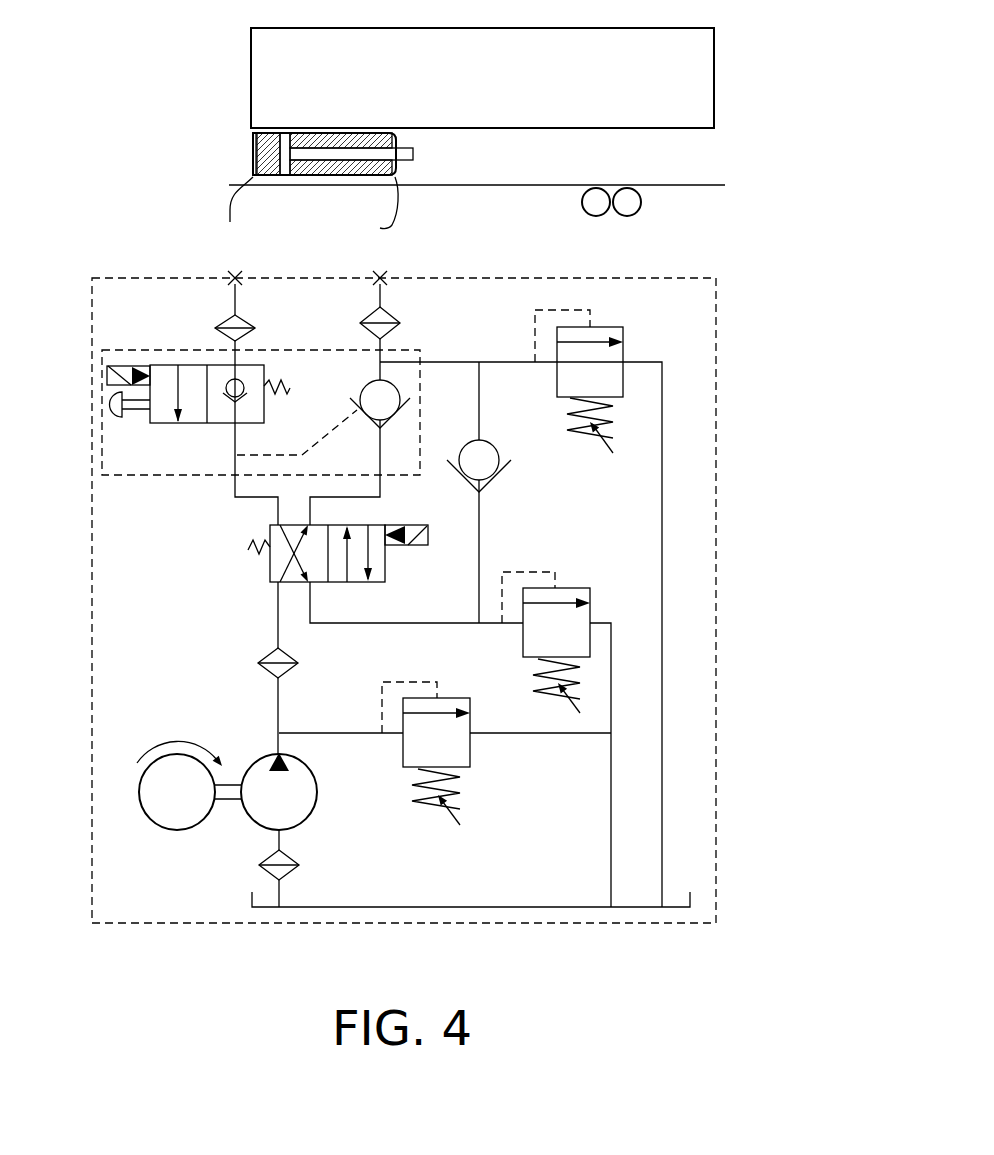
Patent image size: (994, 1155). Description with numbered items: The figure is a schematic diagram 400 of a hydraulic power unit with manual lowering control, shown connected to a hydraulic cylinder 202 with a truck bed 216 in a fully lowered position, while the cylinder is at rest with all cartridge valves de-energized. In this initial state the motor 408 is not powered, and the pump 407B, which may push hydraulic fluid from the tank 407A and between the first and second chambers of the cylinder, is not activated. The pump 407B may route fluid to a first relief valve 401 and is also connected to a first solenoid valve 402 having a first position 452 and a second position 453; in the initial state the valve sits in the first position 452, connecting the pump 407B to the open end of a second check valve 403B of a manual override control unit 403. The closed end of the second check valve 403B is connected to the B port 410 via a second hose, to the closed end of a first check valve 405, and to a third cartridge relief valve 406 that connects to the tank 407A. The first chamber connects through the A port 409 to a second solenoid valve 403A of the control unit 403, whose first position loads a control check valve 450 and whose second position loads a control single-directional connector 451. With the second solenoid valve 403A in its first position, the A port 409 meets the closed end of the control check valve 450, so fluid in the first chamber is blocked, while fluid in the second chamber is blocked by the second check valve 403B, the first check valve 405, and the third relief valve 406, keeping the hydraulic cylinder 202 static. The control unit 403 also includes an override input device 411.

The truck bed 216 is at (688, 77).
The hydraulic cylinder 202 is at (233, 152).
The A port 409 is at (211, 251).
The B port 410 is at (407, 247).
The schematic diagram 400 is at (776, 950).
The manual override control unit 403 is at (157, 497).
The second solenoid valve 403A is at (163, 379).
The second check valve 403B is at (460, 431).
The control single-directional connector 451 is at (170, 378).
The control check valve 450 is at (256, 372).
The override input device 411 is at (108, 402).
The first check valve 405 is at (548, 494).
The third cartridge relief valve 406 is at (678, 327).
The first solenoid valve 402 is at (335, 593).
The first position 452 is at (292, 584).
The second position 453 is at (385, 578).
The first relief valve 401 is at (516, 786).
The motor 408 is at (150, 853).
The pump 407B is at (364, 841).
The tank 407A is at (498, 894).